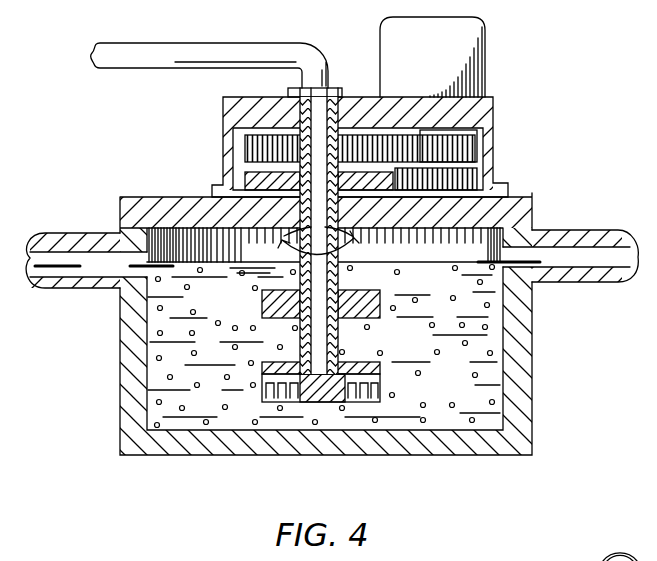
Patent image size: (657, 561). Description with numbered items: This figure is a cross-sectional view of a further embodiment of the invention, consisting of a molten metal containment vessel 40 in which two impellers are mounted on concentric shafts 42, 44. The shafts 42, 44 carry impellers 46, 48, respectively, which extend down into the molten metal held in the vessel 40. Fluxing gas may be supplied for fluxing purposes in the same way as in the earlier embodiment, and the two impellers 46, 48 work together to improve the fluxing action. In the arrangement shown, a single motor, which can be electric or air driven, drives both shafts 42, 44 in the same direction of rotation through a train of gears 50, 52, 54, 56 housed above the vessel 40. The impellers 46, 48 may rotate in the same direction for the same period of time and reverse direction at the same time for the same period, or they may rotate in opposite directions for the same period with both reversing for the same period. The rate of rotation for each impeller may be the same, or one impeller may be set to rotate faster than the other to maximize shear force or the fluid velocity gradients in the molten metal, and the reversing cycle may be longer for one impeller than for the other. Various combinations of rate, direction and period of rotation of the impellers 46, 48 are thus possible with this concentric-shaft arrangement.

The molten metal containment vessel 40 is at (572, 365).
The concentric shaft 42 is at (340, 280).
The concentric shaft 44 is at (338, 334).
The impeller 46 is at (262, 315).
The impeller 48 is at (380, 373).
The gear 50 is at (245, 152).
The gear 52 is at (245, 187).
The gear 54 is at (477, 157).
The gear 56 is at (477, 178).